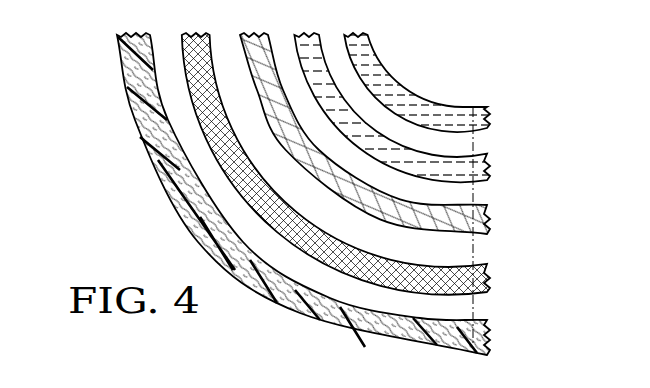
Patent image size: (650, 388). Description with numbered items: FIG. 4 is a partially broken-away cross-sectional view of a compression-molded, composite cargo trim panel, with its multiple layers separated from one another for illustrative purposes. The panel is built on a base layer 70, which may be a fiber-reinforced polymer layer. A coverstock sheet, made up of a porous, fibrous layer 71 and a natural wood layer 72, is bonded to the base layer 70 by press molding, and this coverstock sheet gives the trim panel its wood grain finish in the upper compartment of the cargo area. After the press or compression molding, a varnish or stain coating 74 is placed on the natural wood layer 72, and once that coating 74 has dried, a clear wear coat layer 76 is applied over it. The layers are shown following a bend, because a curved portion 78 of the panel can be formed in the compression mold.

The base layer 70 is at (486, 343).
The porous, fibrous layer 71 is at (486, 282).
The natural wood layer 72 is at (486, 225).
The varnish or stain coating 74 is at (487, 174).
The clear wear coat layer 76 is at (488, 117).
The curved portion 78 is at (183, 220).